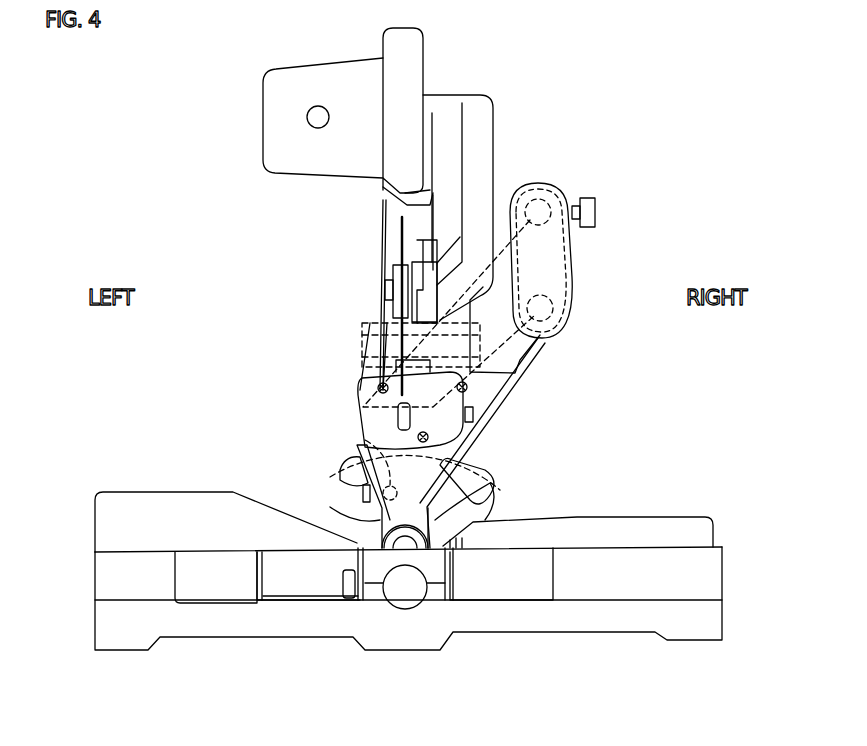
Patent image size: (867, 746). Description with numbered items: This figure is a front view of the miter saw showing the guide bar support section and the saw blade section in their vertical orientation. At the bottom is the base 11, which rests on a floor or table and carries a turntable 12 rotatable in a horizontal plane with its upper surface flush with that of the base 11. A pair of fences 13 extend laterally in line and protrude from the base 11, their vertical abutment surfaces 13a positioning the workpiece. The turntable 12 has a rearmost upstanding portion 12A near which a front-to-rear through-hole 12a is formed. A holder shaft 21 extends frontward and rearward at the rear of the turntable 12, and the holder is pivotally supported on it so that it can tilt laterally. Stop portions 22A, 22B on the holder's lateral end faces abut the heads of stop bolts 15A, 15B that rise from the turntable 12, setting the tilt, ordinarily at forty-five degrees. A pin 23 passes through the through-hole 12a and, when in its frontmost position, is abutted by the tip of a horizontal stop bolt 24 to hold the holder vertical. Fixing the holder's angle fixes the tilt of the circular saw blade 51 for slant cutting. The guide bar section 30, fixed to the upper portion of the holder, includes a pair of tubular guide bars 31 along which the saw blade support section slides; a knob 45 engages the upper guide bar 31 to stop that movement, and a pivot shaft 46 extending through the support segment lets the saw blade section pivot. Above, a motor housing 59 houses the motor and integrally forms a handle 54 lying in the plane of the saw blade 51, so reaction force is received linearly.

The base 11 is at (125, 633).
The turntable 12 is at (287, 567).
The rearmost upstanding portion 12A is at (480, 457).
The through-hole 12a is at (478, 475).
The fence 13 is at (157, 492).
The vertical abutment surface 13a is at (138, 515).
The stop bolt 15A is at (310, 517).
The stop bolt 15B is at (475, 537).
The holder shaft 21 is at (407, 552).
The stop portion 22A is at (327, 520).
The stop portion 22B is at (490, 483).
The pin 23 is at (363, 440).
The stop bolt 24 is at (362, 490).
The guide bar section 30 is at (583, 277).
The guide bar 31 is at (550, 200).
The knob 45 is at (595, 212).
The pivot shaft 46 is at (370, 318).
The circular saw blade 51 is at (397, 237).
The handle 54 is at (405, 68).
The motor housing 59 is at (327, 77).